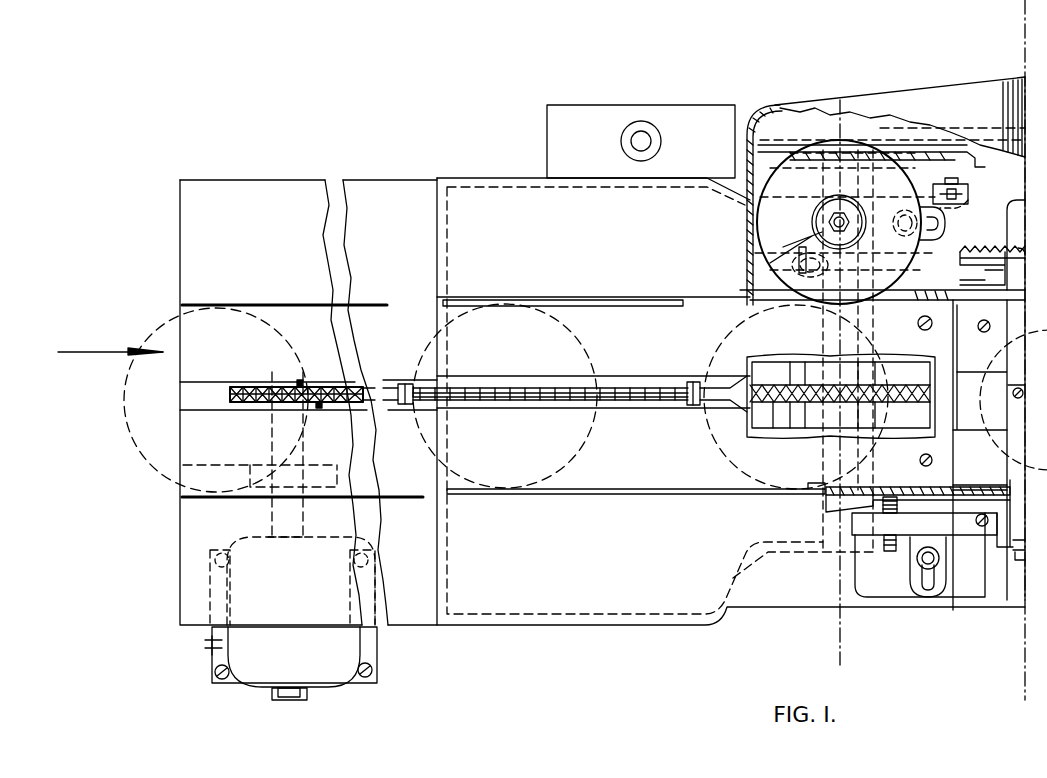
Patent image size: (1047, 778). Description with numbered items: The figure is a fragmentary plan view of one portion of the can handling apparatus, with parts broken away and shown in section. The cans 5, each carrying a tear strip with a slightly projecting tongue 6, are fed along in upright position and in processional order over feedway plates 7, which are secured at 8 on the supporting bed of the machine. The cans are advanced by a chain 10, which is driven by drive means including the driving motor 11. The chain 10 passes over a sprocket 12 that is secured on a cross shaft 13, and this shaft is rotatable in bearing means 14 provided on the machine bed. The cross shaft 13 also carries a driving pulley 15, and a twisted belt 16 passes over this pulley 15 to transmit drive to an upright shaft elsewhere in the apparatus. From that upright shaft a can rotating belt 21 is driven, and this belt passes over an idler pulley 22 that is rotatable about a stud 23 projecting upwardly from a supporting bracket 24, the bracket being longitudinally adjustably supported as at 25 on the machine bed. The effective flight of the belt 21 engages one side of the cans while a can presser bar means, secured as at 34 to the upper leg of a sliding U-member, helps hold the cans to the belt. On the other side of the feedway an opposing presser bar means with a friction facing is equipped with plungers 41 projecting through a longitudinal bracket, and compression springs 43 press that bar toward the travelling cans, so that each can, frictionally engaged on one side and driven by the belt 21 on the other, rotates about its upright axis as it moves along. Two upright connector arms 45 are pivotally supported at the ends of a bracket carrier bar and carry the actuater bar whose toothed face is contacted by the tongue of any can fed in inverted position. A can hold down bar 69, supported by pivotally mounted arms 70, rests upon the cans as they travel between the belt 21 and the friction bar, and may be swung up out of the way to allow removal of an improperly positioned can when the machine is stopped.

The cans 5 is at (860, 127).
The projecting tongues 6 is at (928, 328).
The feedway plates 7 is at (188, 416).
The securing means of feedway plates 8 is at (919, 460).
The chain 10 is at (678, 397).
The driving motor 11 is at (352, 650).
The sprocket 12 is at (780, 426).
The cross shaft 13 is at (833, 471).
The bearing means 14 is at (860, 298).
The driving pulley 15 is at (747, 190).
The twisted belt 16 is at (921, 155).
The can rotating belt 21 is at (951, 138).
The idler pulley 22 is at (748, 250).
The stud 23 is at (754, 268).
The supporting bracket 24 is at (752, 298).
The adjustable support of bracket 25 is at (968, 204).
The securing means of presser bar 34 is at (950, 497).
The plungers 41 is at (903, 535).
The compression springs 43 is at (827, 503).
The connector arms 45 is at (977, 253).
The can hold down bar 69 is at (975, 418).
The arms 70 is at (990, 398).